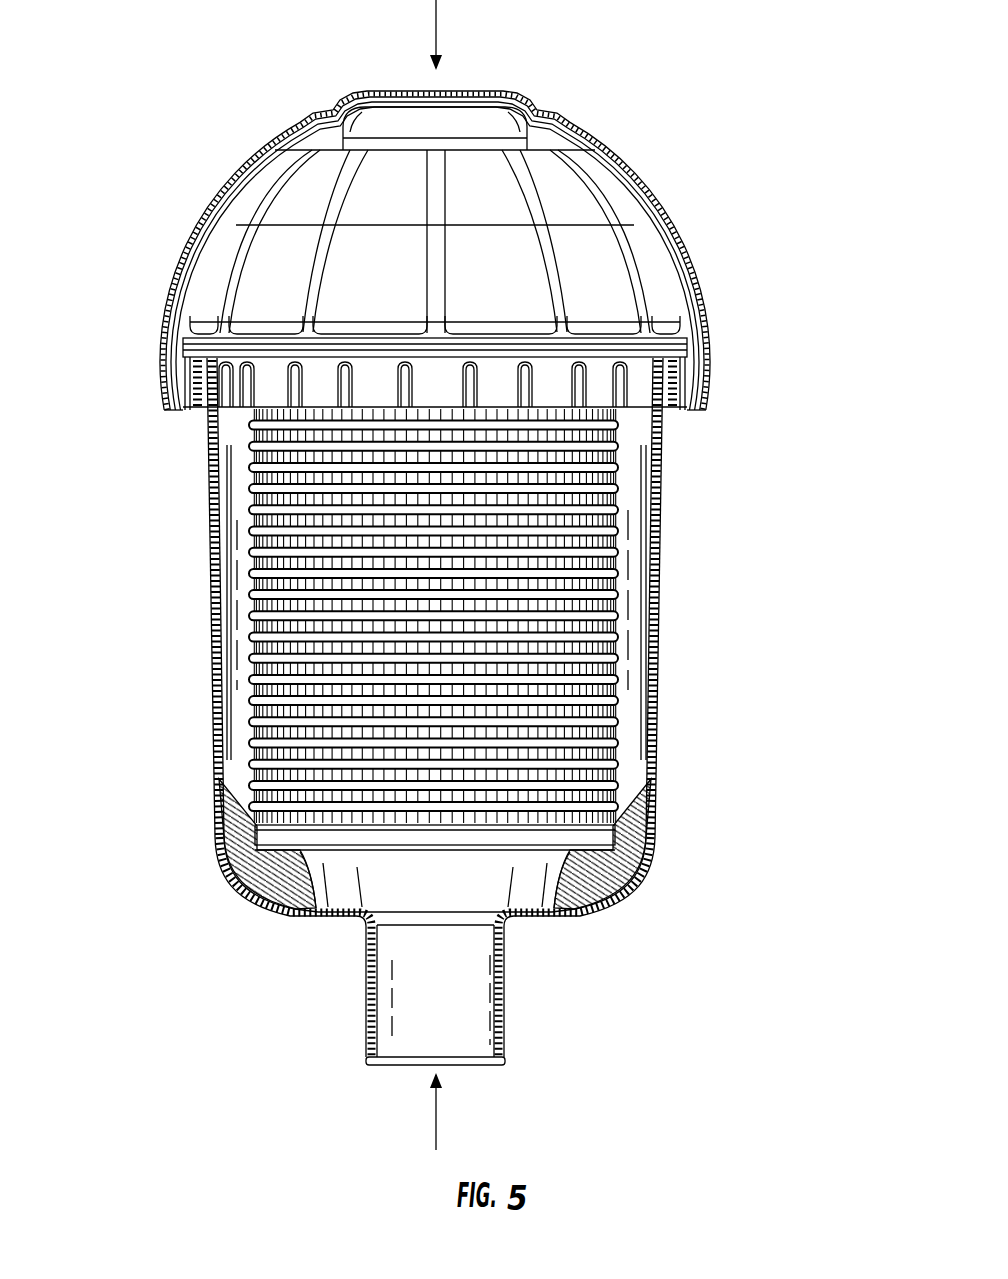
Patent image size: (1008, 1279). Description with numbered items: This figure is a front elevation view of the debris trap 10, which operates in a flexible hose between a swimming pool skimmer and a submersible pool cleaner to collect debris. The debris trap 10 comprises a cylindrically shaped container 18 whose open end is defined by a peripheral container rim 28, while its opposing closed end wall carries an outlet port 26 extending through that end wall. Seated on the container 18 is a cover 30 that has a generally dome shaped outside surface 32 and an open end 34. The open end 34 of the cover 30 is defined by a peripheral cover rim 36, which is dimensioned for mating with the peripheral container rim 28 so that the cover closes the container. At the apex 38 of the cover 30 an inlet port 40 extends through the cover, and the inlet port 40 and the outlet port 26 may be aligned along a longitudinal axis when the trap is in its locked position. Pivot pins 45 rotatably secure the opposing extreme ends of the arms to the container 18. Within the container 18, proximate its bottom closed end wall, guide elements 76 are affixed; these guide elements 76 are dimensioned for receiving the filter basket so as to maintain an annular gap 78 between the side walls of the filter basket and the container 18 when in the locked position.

The debris trap 10 is at (436, 25).
The container 18 is at (670, 614).
The outlet port 26 is at (388, 996).
The peripheral container rim 28 is at (605, 360).
The cover 30 is at (208, 270).
The dome shaped outside surface 32 is at (501, 262).
The open end 34 is at (247, 358).
The peripheral cover rim 36 is at (657, 357).
The apex 38 is at (493, 160).
The inlet port 40 is at (522, 93).
The pivot pins 45 is at (190, 398).
The guide elements 76 is at (610, 864).
The annular gap 78 is at (628, 708).